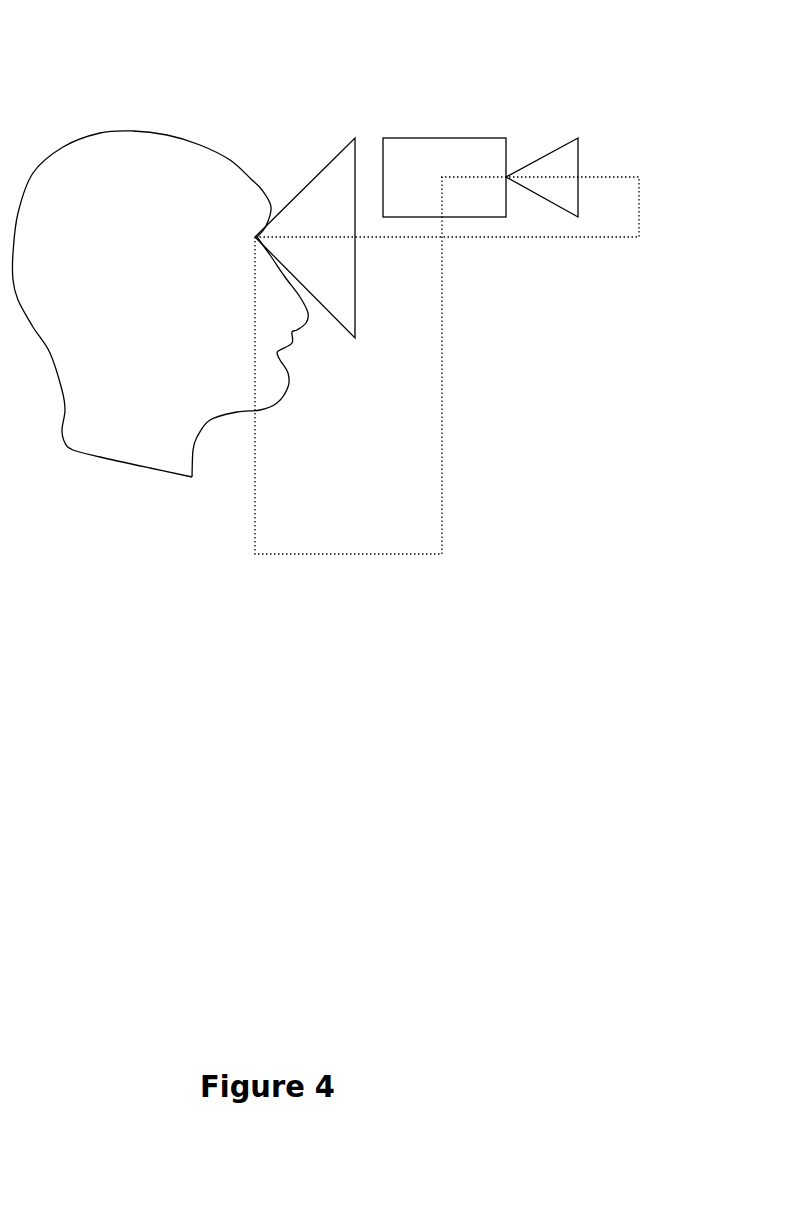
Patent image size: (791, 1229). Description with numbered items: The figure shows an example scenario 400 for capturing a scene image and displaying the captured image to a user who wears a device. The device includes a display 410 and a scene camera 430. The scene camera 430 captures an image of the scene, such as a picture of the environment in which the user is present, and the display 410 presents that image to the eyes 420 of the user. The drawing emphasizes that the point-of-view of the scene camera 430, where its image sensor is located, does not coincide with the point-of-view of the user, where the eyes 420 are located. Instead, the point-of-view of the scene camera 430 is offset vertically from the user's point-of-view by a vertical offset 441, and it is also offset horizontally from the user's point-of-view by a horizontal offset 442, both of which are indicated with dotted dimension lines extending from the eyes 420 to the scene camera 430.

The example scenario 400 is at (318, 45).
The display 410 is at (332, 152).
The eyes 420 is at (257, 237).
The scene camera 430 is at (440, 138).
The vertical offset 441 is at (640, 212).
The horizontal offset 442 is at (355, 555).